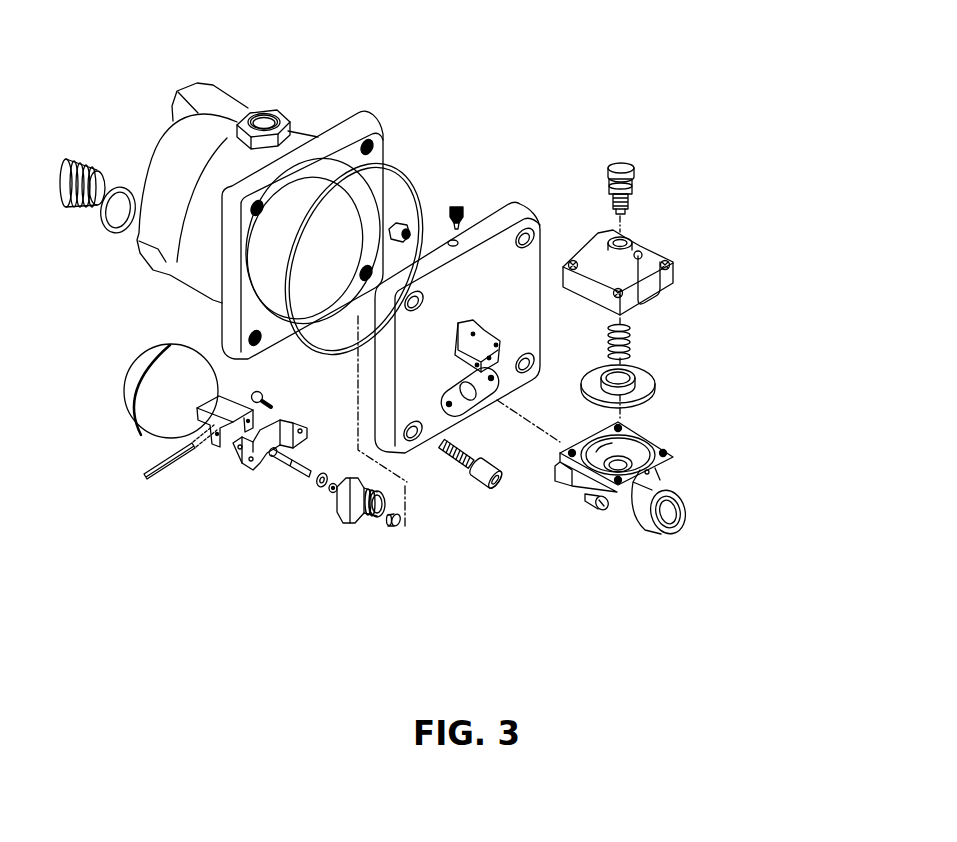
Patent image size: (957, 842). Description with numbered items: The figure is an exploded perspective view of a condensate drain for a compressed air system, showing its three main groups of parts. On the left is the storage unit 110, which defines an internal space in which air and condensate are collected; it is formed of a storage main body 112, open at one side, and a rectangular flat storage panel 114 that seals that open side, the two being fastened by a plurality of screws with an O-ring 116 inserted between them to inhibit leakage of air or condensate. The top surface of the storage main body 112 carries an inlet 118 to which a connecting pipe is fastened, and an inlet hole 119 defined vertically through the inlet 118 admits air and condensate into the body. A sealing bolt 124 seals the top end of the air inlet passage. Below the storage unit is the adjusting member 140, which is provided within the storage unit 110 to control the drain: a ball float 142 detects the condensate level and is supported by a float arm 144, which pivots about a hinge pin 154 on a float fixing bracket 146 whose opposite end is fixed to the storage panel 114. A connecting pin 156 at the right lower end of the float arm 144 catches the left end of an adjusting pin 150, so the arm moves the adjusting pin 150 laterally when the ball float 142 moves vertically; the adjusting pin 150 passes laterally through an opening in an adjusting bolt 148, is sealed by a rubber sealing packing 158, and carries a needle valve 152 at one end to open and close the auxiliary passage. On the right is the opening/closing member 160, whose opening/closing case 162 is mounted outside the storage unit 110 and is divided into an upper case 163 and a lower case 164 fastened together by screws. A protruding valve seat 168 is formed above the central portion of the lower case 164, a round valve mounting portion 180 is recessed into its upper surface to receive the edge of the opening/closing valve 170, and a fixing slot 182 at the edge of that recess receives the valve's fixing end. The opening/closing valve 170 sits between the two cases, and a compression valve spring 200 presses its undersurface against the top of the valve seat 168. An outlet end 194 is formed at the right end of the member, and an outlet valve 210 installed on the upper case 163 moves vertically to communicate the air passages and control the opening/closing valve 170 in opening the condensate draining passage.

The storage unit 110 is at (342, 52).
The storage main body 112 is at (312, 117).
The storage panel 114 is at (497, 192).
The O-ring 116 is at (401, 175).
The inlet 118 is at (246, 109).
The inlet hole 119 is at (279, 110).
The sealing bolt 124 is at (456, 205).
The adjusting member 140 is at (75, 570).
The ball float 142 is at (135, 405).
The float arm 144 is at (210, 438).
The float fixing bracket 146 is at (250, 470).
The adjusting bolt 148 is at (348, 522).
The adjusting pin 150 is at (290, 465).
The needle valve 152 is at (392, 528).
The hinge pin 154 is at (146, 480).
The connecting pin 156 is at (162, 484).
The sealing packing 158 is at (322, 490).
The opening/closing member 160 is at (841, 155).
The opening/closing case 162 is at (788, 300).
The upper case 163 is at (675, 295).
The lower case 164 is at (677, 444).
The valve seat 168 is at (619, 488).
The opening/closing valve 170 is at (665, 385).
The valve mounting portion 180 is at (655, 467).
The fixing slot 182 is at (670, 462).
The outlet end 194 is at (686, 515).
The valve spring 200 is at (639, 345).
The outlet valve 210 is at (648, 187).